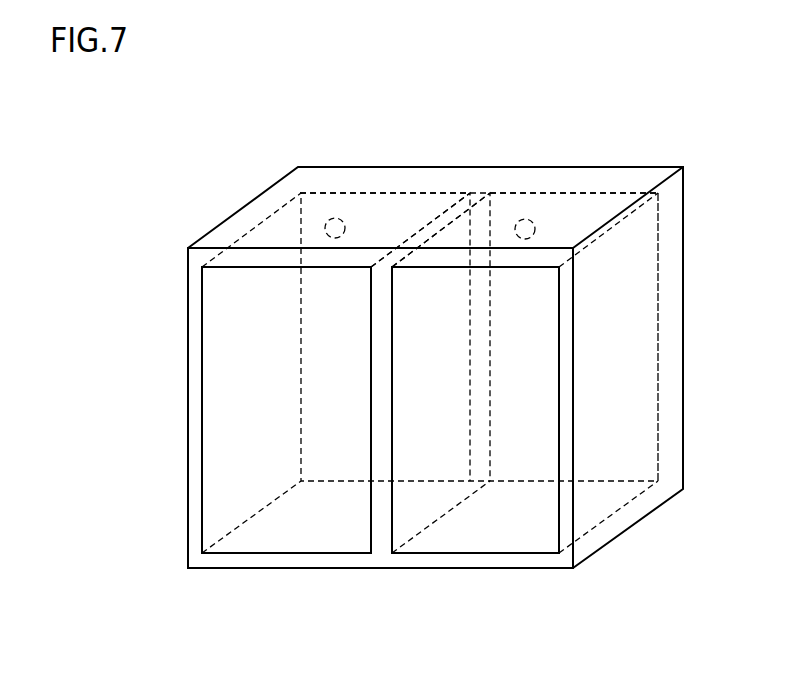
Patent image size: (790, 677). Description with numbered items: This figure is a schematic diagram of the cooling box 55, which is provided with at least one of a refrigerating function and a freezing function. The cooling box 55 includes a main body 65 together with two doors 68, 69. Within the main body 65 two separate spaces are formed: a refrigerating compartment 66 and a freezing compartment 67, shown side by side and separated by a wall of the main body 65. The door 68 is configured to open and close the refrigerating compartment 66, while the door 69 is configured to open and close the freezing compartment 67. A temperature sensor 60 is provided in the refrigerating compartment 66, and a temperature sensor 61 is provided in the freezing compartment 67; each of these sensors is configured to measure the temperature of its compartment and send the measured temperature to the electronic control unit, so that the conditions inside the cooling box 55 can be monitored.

The cooling box 55 is at (655, 127).
The temperature sensor 60 is at (524, 219).
The temperature sensor 61 is at (332, 218).
The main body 65 is at (383, 548).
The refrigerating compartment 66 is at (563, 193).
The freezing compartment 67 is at (364, 193).
The door 68 is at (481, 543).
The door 69 is at (292, 542).